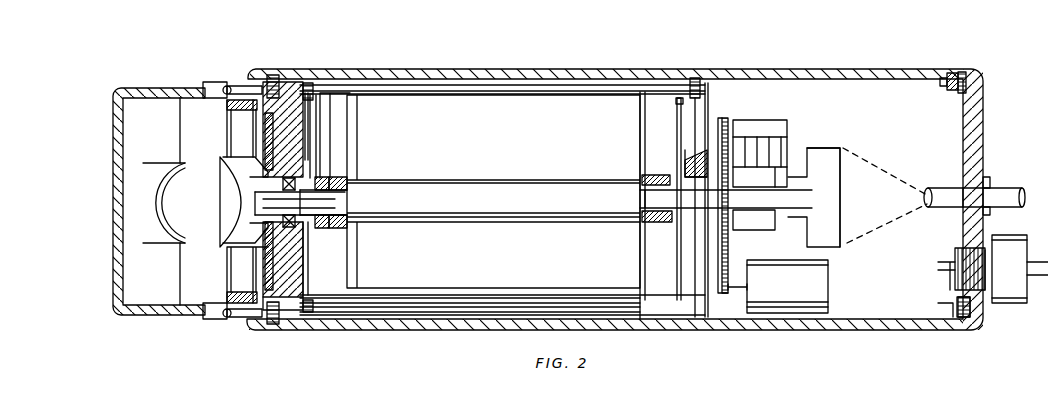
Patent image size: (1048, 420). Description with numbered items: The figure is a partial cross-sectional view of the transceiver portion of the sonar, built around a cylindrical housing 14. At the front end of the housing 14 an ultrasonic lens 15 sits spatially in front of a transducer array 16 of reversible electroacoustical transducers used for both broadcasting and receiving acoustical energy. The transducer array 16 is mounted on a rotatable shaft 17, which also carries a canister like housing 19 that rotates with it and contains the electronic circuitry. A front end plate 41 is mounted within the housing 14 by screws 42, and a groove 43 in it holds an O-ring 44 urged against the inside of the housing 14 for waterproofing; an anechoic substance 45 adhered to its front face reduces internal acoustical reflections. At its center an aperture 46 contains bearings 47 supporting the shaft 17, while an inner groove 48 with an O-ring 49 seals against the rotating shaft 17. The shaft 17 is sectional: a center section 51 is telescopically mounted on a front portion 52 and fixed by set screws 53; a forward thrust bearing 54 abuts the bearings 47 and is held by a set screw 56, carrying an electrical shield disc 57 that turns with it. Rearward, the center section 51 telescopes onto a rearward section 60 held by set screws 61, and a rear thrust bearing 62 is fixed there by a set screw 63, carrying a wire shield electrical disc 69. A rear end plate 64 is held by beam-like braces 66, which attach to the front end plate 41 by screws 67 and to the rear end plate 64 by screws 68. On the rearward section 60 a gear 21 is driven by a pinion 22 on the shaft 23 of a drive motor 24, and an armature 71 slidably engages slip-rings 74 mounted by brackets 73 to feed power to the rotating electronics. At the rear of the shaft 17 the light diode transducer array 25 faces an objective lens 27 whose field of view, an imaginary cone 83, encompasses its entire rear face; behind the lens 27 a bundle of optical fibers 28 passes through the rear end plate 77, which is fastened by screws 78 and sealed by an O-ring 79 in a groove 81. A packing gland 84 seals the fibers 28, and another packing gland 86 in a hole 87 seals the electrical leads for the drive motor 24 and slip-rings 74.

The cylindrical housing 14 is at (494, 68).
The ultrasonic lens 15 is at (180, 88).
The transducer array 16 is at (222, 197).
The rotatable shaft 17 is at (327, 230).
The canister like housing 19 is at (532, 78).
The gear 21 is at (727, 120).
The pinion 22 is at (725, 300).
The shaft 23 is at (734, 285).
The drive motor 24 is at (826, 285).
The transducer array 25 is at (840, 149).
The objective lens 27 is at (926, 204).
The bundle of optical fibers 28 is at (945, 208).
The end plate 41 is at (311, 124).
The screws 42 is at (271, 72).
The groove 43 is at (316, 74).
The O-ring 44 is at (298, 78).
The anechoic substance 45 is at (262, 256).
The aperture 46 is at (250, 226).
The bearings 47 is at (326, 138).
The inner groove 48 is at (248, 180).
The O-ring 49 is at (246, 170).
The center section 51 is at (472, 180).
The front portion 52 is at (346, 197).
The set screws 53 is at (348, 181).
The forward thrust bearing 54 is at (346, 178).
The set screw 56 is at (321, 178).
The electrical shield disc 57 is at (318, 95).
The rearward section 60 is at (640, 197).
The set screws 61 is at (642, 178).
The rear thrust bearing 62 is at (668, 222).
The set screw 63 is at (670, 175).
The rear end plate 64 is at (681, 123).
The braces 66 is at (543, 86).
The screws 67 is at (350, 77).
The screws 68 is at (700, 75).
The wire shield electrical disc 69 is at (675, 99).
The armature 71 is at (802, 150).
The brackets 73 is at (757, 120).
The slip-rings 74 is at (771, 140).
The end plate 77 is at (983, 120).
The screws 78 is at (972, 70).
The O-ring 79 is at (951, 70).
The groove 81 is at (942, 73).
The imaginary cone 83 is at (876, 170).
The packing gland 84 is at (990, 180).
The packing gland 86 is at (1007, 304).
The hole 87 is at (956, 292).